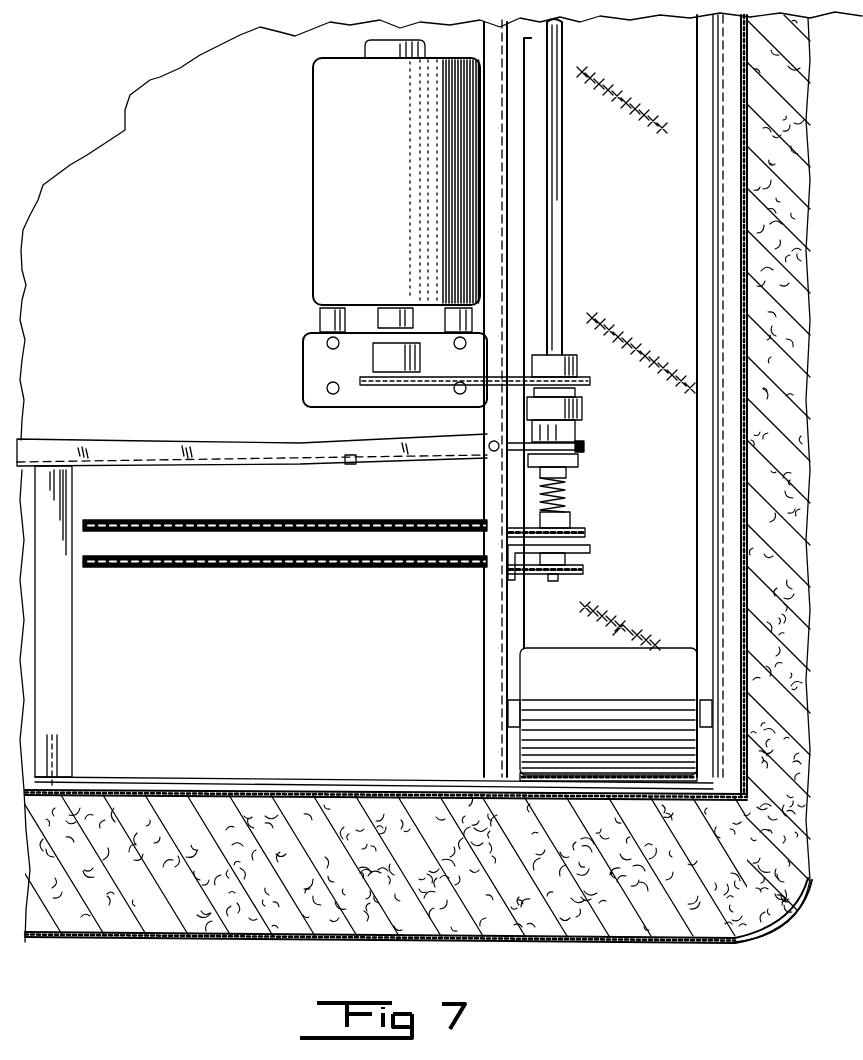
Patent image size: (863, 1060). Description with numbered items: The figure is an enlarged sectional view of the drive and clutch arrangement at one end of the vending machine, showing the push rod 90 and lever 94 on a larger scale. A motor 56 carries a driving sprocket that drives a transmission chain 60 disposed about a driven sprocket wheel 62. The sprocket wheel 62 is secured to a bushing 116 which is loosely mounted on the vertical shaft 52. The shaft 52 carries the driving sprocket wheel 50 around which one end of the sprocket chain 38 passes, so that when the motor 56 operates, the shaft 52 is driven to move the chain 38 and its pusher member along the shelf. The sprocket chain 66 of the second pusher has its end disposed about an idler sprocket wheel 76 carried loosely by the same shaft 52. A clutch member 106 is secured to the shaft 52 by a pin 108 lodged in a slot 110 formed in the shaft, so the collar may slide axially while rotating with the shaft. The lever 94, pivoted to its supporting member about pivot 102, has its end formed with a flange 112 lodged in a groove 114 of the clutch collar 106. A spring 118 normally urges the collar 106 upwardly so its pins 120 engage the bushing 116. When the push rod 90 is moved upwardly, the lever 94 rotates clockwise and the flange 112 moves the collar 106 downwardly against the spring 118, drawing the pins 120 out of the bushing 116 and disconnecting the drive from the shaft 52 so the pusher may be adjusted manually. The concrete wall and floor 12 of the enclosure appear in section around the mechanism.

The concrete wall and floor 12 is at (595, 940).
The sprocket chain 38 is at (283, 520).
The driving sprocket wheel 50 is at (590, 545).
The shaft 52 is at (563, 265).
The motor 56 is at (327, 160).
The transmission chain 60 is at (420, 388).
The driven sprocket wheel 62 is at (577, 377).
The sprocket chain 66 is at (348, 568).
The idler sprocket wheel 76 is at (578, 576).
The push rod 90 is at (80, 777).
The lever 94 is at (165, 438).
The pivot 102 is at (490, 452).
The clutch member 106 is at (588, 466).
The pin 108 is at (543, 470).
The slot 110 is at (566, 490).
The flange 112 is at (350, 464).
The groove 114 is at (583, 452).
The bushing 116 is at (585, 400).
The spring 118 is at (570, 512).
The pins 120 is at (584, 412).